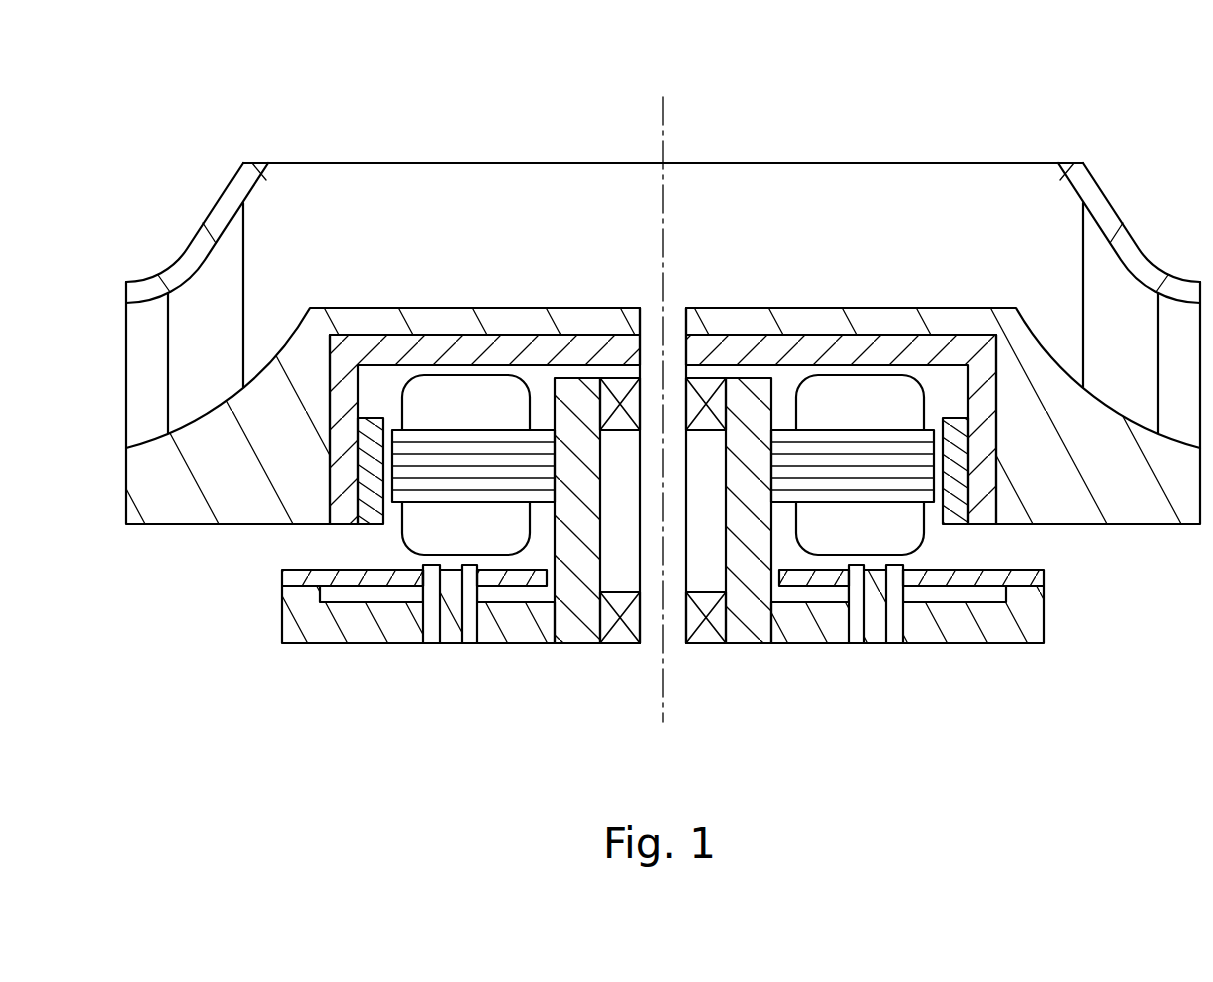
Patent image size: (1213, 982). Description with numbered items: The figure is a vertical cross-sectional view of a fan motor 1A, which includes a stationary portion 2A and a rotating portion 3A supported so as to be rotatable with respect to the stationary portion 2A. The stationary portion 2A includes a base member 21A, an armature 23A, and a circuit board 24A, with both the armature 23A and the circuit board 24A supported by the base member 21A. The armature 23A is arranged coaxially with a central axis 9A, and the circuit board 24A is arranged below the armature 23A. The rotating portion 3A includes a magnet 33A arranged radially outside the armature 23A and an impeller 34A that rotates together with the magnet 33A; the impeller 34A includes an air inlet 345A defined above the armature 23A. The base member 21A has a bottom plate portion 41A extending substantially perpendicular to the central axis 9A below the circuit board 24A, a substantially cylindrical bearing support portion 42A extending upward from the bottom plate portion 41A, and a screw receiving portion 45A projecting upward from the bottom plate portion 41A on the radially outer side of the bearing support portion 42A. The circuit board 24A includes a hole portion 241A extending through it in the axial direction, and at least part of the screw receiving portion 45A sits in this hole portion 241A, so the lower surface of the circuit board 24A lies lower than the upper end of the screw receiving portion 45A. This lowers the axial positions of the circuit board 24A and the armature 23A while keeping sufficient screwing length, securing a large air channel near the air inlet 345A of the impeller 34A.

The fan motor 1A is at (492, 108).
The central axis 9A is at (662, 132).
The air inlet 345A is at (846, 168).
The rotating portion 3A is at (1134, 218).
The impeller 34A is at (228, 207).
The armature 23A is at (397, 387).
The magnet 33A is at (955, 487).
The stationary portion 2A is at (813, 663).
The base member 21A is at (600, 706).
The bottom plate portion 41A is at (528, 618).
The bearing support portion 42A is at (580, 468).
The screw receiving portion 45A is at (470, 587).
The circuit board 24A is at (342, 577).
The hole portion 241A is at (415, 578).